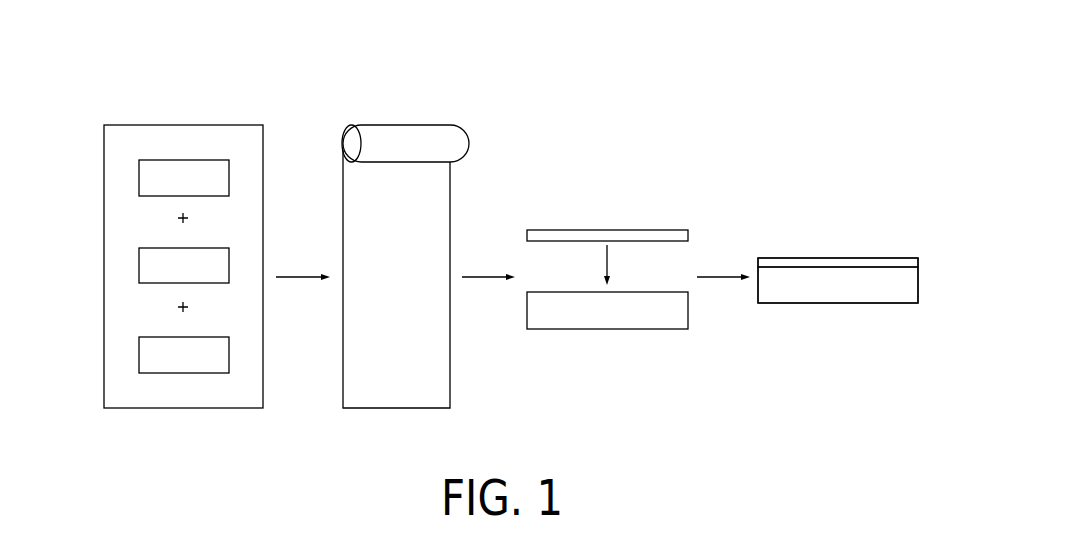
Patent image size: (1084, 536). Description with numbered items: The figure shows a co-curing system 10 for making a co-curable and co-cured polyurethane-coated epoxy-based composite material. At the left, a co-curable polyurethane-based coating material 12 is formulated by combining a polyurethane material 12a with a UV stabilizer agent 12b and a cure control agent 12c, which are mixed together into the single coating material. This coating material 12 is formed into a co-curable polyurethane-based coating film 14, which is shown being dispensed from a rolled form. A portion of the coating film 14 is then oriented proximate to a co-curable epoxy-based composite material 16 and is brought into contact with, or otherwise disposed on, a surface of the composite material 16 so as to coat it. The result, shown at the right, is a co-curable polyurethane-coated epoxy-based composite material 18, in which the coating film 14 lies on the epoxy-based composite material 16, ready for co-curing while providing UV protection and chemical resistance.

The co-curing system 10 is at (583, 113).
The co-curable polyurethane-based coating material 12 is at (153, 230).
The polyurethane material 12a is at (139, 176).
The UV stabilizer agent 12b is at (139, 265).
The cure control agent 12c is at (139, 353).
The co-curable polyurethane-based coating film 14 is at (414, 123).
The co-curable epoxy-based composite material 16 is at (643, 330).
The co-curable polyurethane-coated epoxy-based composite material 18 is at (829, 240).